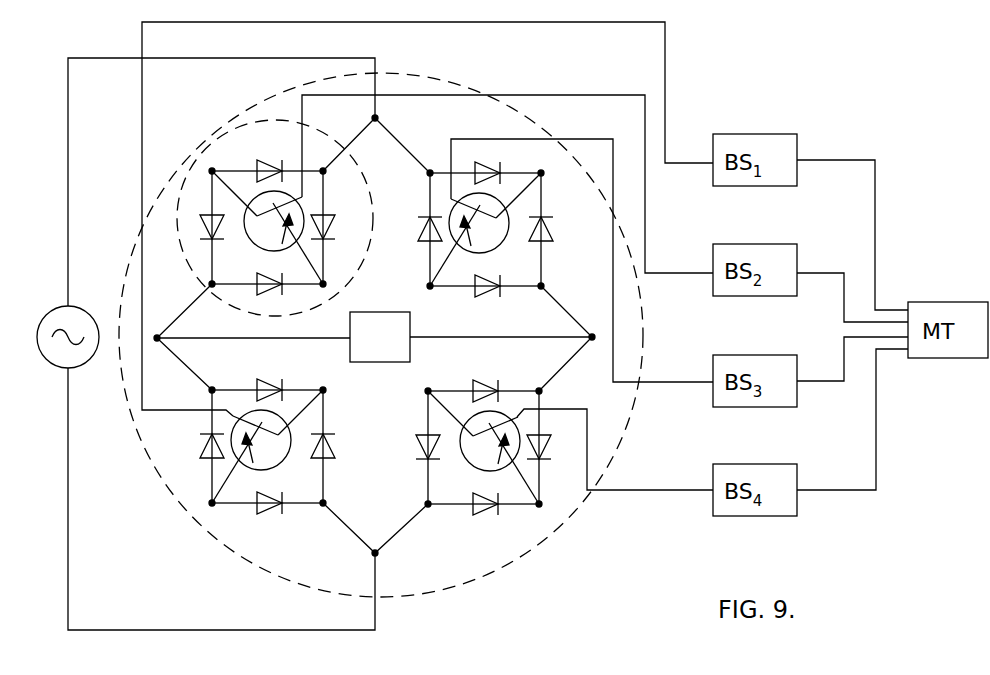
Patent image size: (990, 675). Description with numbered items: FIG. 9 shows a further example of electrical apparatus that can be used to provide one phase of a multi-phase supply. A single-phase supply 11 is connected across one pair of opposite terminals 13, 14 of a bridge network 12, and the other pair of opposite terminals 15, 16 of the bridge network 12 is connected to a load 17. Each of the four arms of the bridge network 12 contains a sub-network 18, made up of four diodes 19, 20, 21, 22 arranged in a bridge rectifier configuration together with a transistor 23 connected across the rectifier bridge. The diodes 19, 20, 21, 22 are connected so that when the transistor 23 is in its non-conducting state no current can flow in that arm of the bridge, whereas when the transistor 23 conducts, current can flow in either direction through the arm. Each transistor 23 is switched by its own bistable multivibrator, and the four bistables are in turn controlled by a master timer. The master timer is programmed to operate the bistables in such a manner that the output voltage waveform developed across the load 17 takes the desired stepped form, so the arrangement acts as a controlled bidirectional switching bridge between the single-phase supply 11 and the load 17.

The single-phase supply 11 is at (76, 308).
The bridge network 12 is at (470, 583).
The terminal 13 is at (380, 118).
The terminal 14 is at (380, 556).
The terminal 15 is at (158, 334).
The terminal 16 is at (592, 333).
The load 17 is at (393, 352).
The sub-network 18 is at (213, 137).
The diode 19 is at (205, 209).
The diode 20 is at (275, 255).
The diode 21 is at (336, 208).
The diode 22 is at (275, 155).
The transistor 23 is at (249, 274).